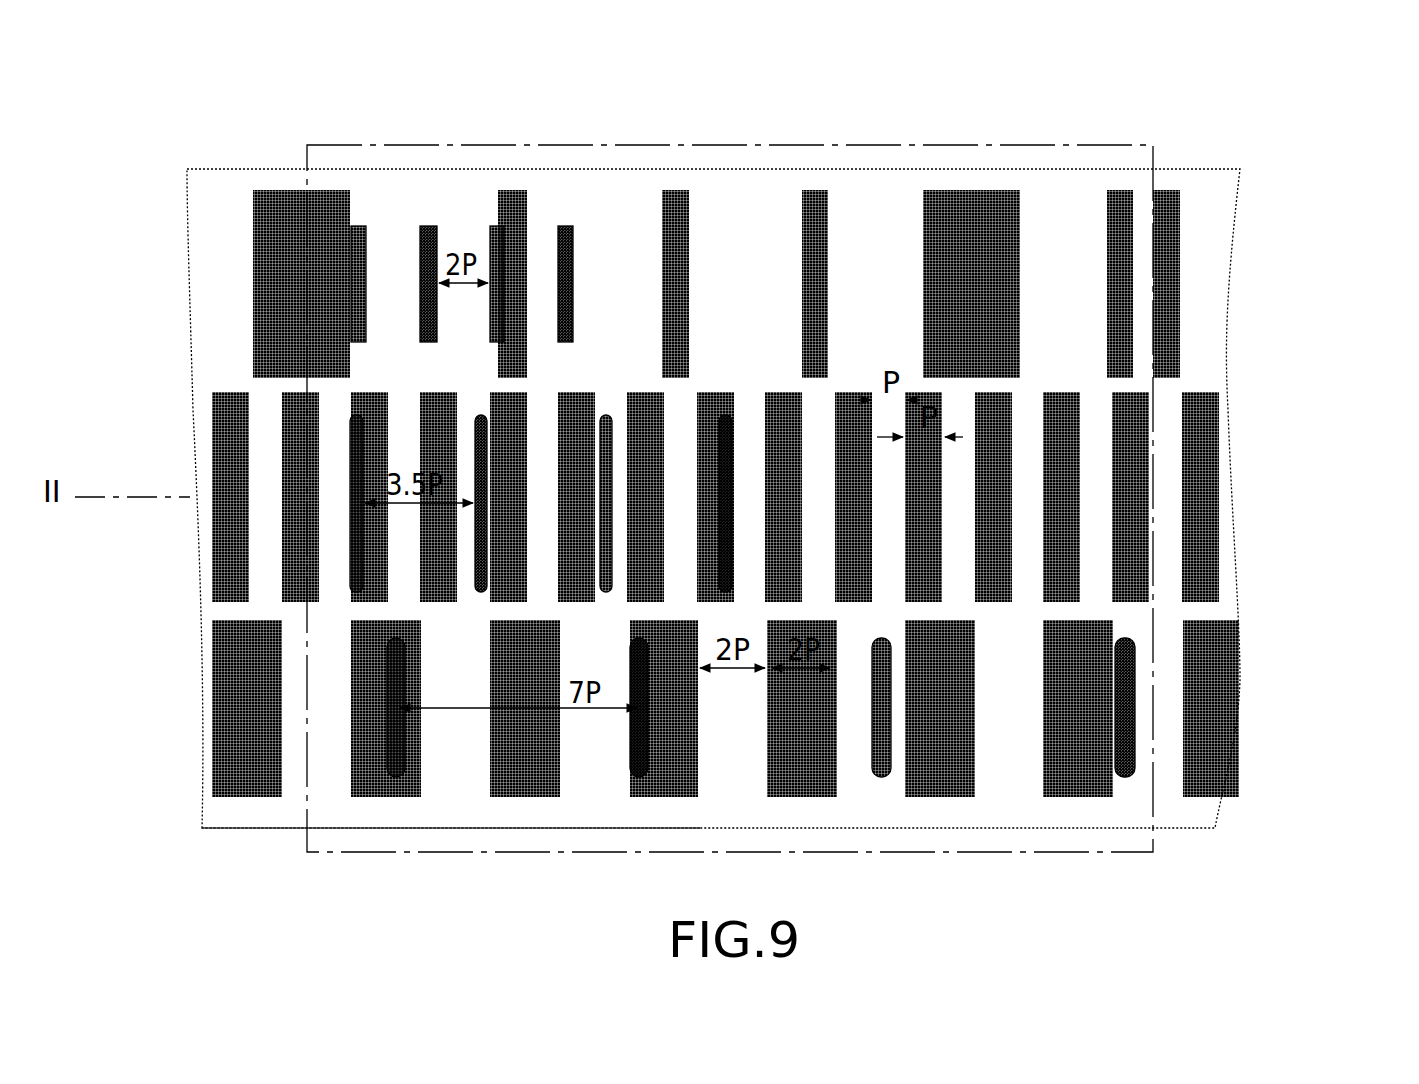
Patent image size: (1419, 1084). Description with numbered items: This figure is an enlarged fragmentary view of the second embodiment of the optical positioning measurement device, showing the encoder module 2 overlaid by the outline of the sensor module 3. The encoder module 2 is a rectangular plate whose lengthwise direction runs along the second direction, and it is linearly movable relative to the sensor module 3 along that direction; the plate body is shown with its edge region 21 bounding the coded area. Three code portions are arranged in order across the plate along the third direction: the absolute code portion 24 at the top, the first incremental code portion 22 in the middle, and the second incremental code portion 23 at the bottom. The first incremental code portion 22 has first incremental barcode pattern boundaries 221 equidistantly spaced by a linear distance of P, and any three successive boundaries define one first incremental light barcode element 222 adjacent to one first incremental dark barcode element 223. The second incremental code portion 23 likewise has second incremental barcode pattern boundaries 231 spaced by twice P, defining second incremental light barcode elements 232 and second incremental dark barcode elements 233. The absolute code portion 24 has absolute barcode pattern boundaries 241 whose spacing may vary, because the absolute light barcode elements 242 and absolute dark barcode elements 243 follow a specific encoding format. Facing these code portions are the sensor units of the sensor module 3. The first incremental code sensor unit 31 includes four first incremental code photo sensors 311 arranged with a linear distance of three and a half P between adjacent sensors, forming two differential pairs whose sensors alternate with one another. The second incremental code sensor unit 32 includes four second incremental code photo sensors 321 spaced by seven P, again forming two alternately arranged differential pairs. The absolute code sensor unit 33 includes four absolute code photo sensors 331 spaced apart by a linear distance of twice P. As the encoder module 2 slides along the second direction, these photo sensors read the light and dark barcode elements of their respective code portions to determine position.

The encoder module 2 is at (162, 294).
The substrate body 21 is at (253, 828).
The sensor module 3 is at (714, 136).
The first incremental code portion 22 is at (802, 420).
The first incremental barcode pattern boundaries 221 is at (1033, 400).
The first incremental light barcode elements 222 is at (1100, 490).
The first incremental dark barcode elements 223 is at (1138, 445).
The second incremental code portion 23 is at (730, 773).
The second incremental barcode pattern boundaries 231 is at (905, 765).
The second incremental light barcode elements 232 is at (853, 735).
The second incremental dark barcode elements 233 is at (933, 755).
The absolute code portion 24 is at (720, 211).
The absolute barcode pattern boundaries 241 is at (923, 227).
The absolute light barcode elements 242 is at (878, 272).
The absolute dark barcode elements 243 is at (820, 245).
The first incremental code sensor unit 31 is at (606, 415).
The first incremental code photo sensors 311 is at (735, 437).
The second incremental code sensor unit 32 is at (393, 777).
The second incremental code photo sensors 321 is at (640, 777).
The absolute code sensor unit 33 is at (366, 282).
The absolute code photo sensors 331 is at (436, 248).